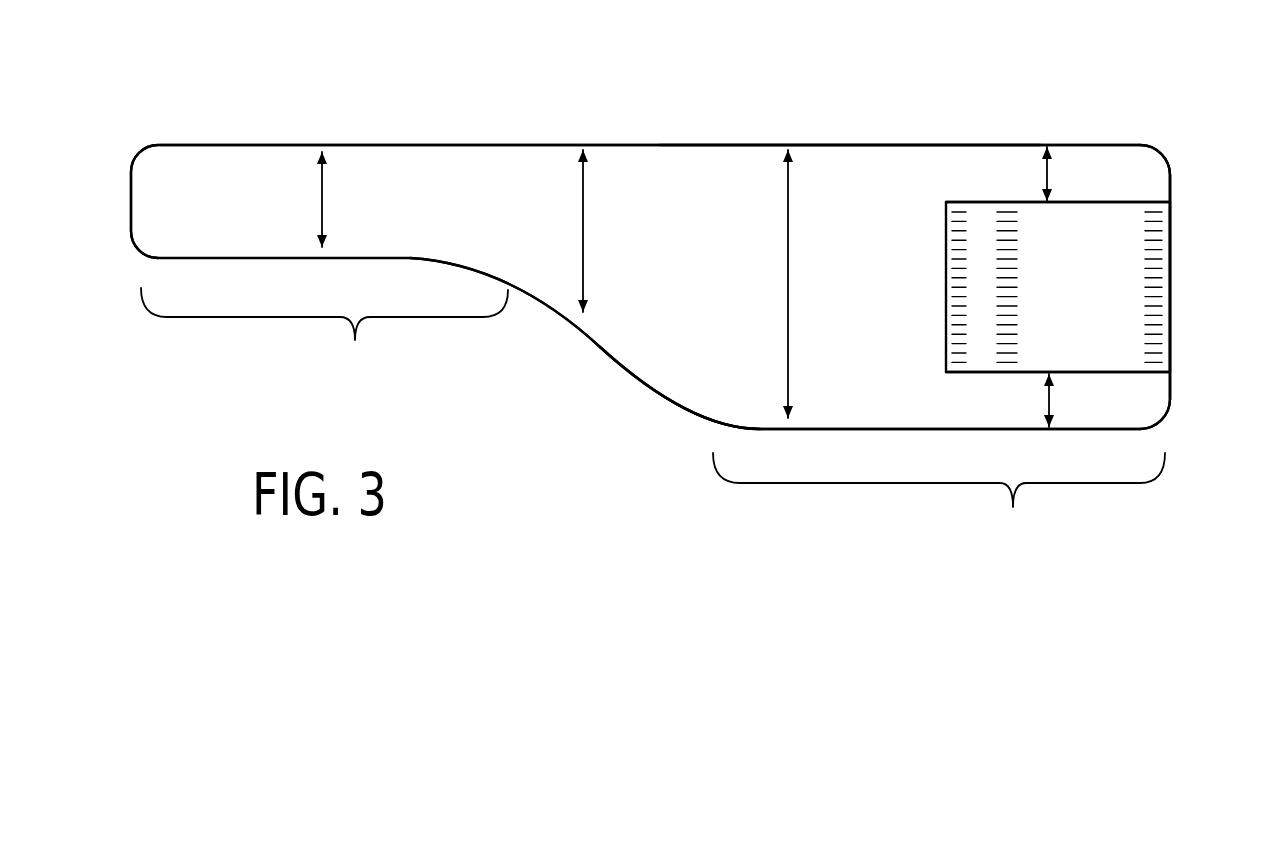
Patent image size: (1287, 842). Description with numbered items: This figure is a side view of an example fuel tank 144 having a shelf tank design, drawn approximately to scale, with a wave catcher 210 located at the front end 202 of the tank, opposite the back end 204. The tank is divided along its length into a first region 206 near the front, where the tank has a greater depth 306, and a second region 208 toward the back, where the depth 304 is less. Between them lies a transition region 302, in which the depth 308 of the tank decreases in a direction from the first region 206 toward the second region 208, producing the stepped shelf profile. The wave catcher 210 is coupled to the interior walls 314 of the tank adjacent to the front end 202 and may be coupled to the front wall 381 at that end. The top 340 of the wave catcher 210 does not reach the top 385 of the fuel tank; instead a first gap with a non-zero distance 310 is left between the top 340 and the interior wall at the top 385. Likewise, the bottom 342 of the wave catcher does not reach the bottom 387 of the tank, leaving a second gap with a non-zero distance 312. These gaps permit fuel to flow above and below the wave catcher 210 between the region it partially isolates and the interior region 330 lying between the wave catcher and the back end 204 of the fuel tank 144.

The fuel tank 144 is at (567, 145).
The front end 202 is at (1181, 267).
The back end 204 is at (124, 161).
The first region 206 is at (939, 496).
The second region 208 is at (324, 331).
The wave catcher 210 is at (1068, 340).
The transition region 302 is at (589, 366).
The depth 304 is at (322, 190).
The depth 306 is at (788, 233).
The depth 308 is at (583, 235).
The non-zero distance 310 is at (1047, 172).
The non-zero distance 312 is at (1049, 396).
The interior walls 314 is at (658, 145).
The interior region 330 is at (687, 368).
The top of the wave catcher 340 is at (977, 203).
The bottom of the wave catcher 342 is at (975, 372).
The front wall 381 is at (1171, 315).
The top of the fuel tank 385 is at (759, 106).
The bottom of the fuel tank 387 is at (707, 523).